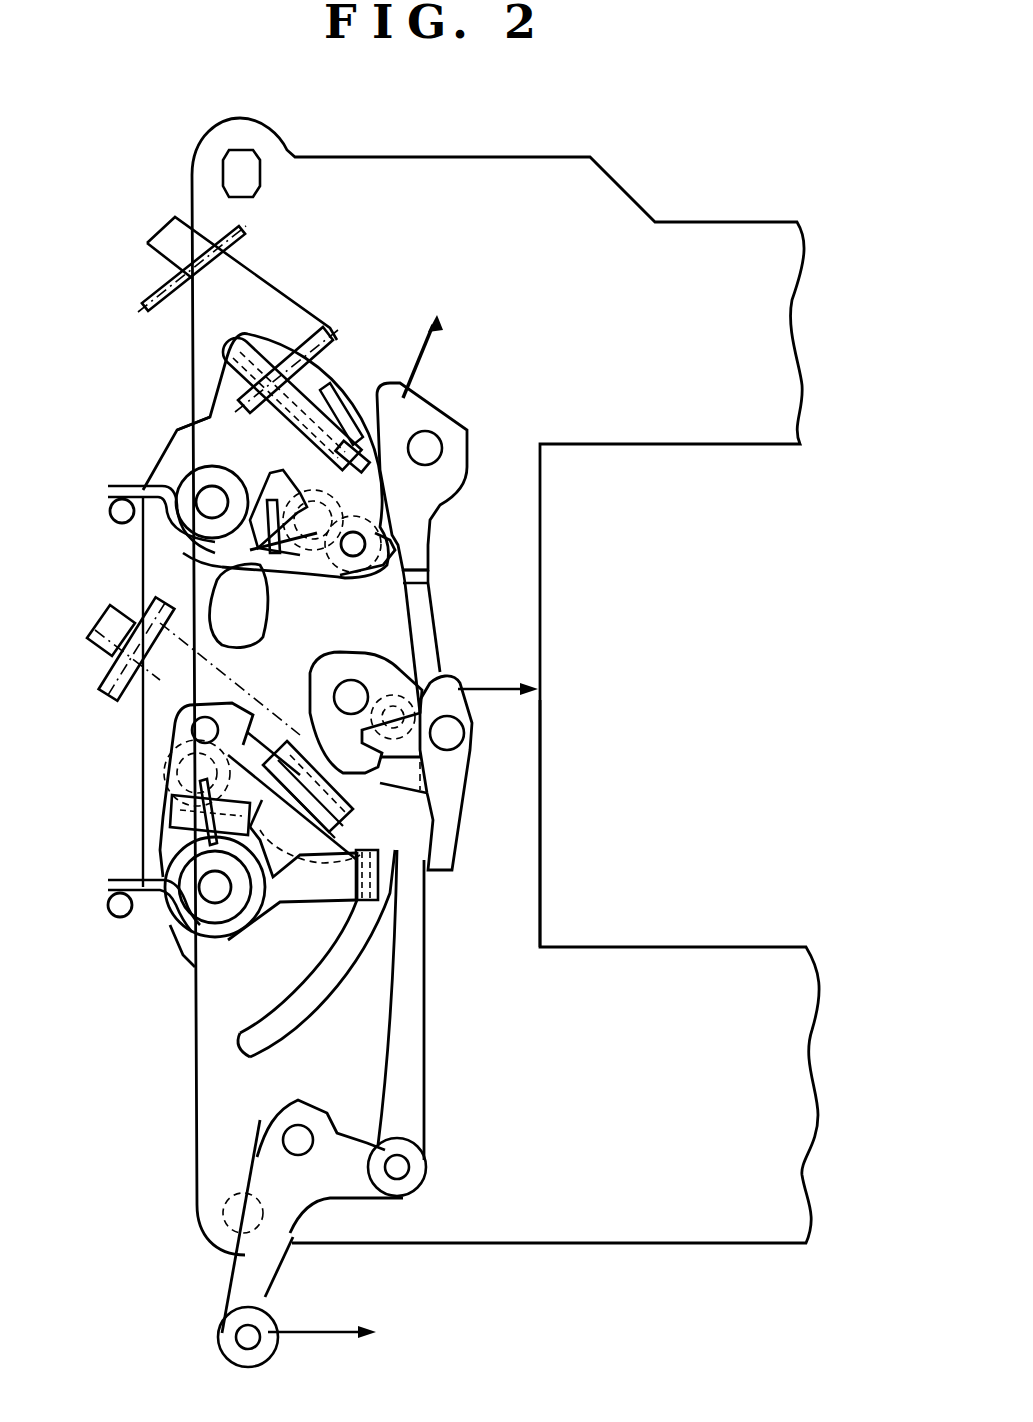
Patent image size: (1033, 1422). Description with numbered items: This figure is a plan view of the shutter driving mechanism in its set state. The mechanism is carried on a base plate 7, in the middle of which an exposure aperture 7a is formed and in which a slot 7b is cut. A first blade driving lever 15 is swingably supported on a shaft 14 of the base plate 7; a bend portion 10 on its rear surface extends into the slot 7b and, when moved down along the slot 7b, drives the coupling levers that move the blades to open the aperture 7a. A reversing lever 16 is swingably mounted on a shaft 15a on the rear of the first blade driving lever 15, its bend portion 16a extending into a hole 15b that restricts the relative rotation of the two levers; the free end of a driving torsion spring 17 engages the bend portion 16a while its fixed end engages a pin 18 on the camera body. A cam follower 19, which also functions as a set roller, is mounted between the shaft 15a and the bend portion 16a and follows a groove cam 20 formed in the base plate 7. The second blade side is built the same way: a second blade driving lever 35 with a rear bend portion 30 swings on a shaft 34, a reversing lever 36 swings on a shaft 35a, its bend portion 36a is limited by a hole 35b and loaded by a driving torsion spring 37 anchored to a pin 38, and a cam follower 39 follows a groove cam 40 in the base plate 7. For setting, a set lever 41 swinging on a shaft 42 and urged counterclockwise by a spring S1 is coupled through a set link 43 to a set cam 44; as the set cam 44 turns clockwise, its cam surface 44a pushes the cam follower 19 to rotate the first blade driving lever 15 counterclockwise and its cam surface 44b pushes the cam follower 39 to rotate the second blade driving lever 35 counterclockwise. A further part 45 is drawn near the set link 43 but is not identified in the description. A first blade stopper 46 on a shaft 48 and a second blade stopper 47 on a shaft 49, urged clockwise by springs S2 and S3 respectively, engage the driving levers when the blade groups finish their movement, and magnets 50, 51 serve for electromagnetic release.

The base plate 7 is at (510, 1243).
The aperture 7a is at (545, 847).
The slot 7b is at (270, 1056).
The bend portion 10 is at (380, 882).
The shaft 14 is at (210, 912).
The first blade driving lever 15 is at (242, 940).
The shaft 15a is at (205, 703).
The hole 15b is at (173, 803).
The reversing lever 16 is at (167, 740).
The bend portion 16a is at (180, 834).
The driving torsion spring 17 is at (262, 905).
The pin 18 is at (117, 903).
The cam follower 19 is at (175, 763).
The groove cam 20 is at (323, 880).
The bend portion 30 is at (236, 333).
The shaft 34 is at (187, 487).
The second blade driving lever 35 is at (192, 425).
The shaft 35a is at (390, 540).
The hole 35b is at (193, 410).
The reversing lever 36 is at (340, 563).
The bend portion 36a is at (195, 550).
The driving torsion spring 37 is at (120, 486).
The pin 38 is at (113, 521).
The cam follower 39 is at (287, 465).
The groove cam 40 is at (108, 640).
The set lever 41 is at (225, 1260).
The shaft 42 is at (312, 1137).
The set link 43 is at (425, 980).
The set cam 44 is at (363, 678).
The cam surface 44a is at (257, 853).
The cam surface 44b is at (220, 563).
The pin 45 is at (410, 630).
The first blade stopper 46 is at (467, 787).
The second blade stopper 47 is at (430, 520).
The shaft 48 is at (465, 734).
The shaft 49 is at (440, 436).
The magnet 50 is at (108, 662).
The magnet 51 is at (298, 297).
The spring S1 is at (313, 1330).
The spring S2 is at (500, 688).
The spring S3 is at (420, 360).